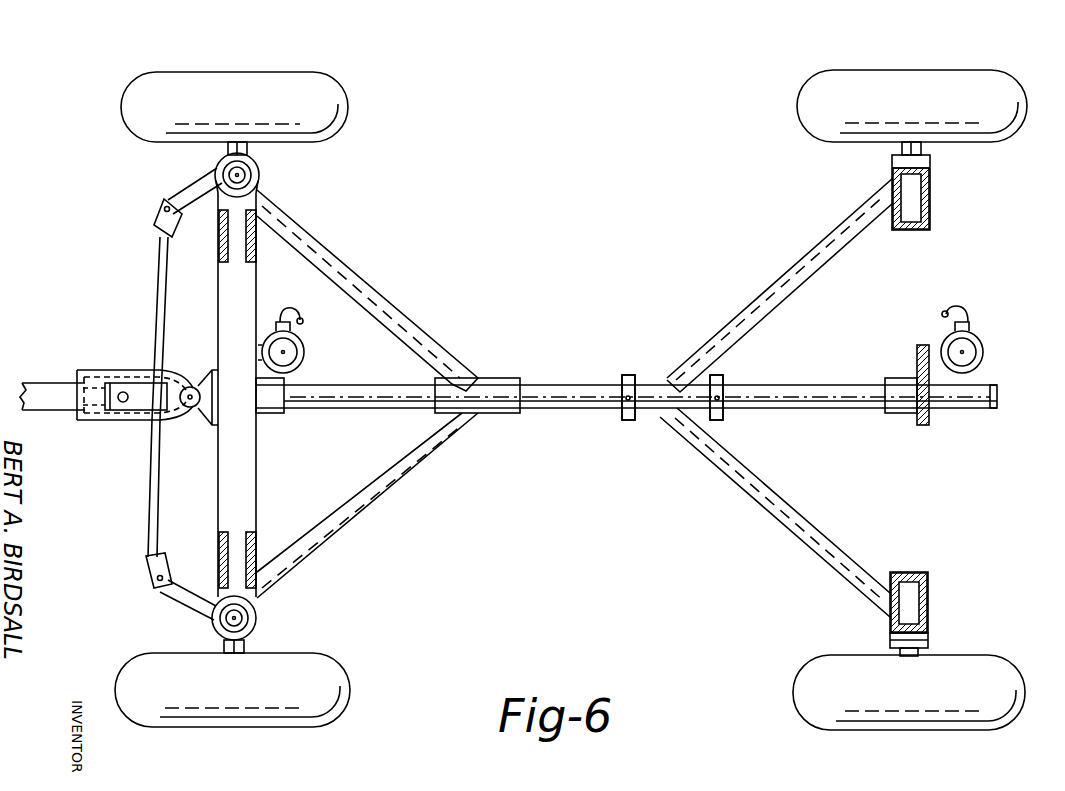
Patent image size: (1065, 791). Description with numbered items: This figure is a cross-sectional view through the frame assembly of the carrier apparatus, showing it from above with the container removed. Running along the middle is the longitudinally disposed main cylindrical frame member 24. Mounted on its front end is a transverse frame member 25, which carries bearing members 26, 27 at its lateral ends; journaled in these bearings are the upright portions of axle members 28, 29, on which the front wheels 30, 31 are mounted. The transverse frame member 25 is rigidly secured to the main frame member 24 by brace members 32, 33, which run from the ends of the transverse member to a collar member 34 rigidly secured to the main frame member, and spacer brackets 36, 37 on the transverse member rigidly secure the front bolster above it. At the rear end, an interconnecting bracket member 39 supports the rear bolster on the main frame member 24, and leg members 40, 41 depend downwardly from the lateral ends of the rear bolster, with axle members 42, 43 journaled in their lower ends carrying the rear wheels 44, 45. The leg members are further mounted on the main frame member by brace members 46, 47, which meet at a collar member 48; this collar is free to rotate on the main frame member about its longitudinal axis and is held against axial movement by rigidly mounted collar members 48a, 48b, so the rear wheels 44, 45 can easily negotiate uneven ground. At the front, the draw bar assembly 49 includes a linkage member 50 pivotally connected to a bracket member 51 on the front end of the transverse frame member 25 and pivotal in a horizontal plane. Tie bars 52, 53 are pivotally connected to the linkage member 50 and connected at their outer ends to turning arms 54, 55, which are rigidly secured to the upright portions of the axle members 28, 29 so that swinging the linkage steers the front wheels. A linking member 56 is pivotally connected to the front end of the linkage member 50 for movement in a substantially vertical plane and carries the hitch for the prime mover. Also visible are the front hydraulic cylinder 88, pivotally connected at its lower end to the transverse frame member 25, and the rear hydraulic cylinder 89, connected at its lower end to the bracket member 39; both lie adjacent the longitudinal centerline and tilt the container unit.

The main cylindrical frame member 24 is at (590, 422).
The transverse frame member 25 is at (256, 458).
The bearing member 26 is at (261, 176).
The bearing member 27 is at (258, 619).
The axle member 28 is at (226, 148).
The axle member 29 is at (222, 644).
The front wheel 30 is at (352, 102).
The front wheel 31 is at (352, 702).
The brace member 32 is at (384, 298).
The brace member 33 is at (404, 487).
The collar member 34 is at (497, 412).
The spacer bracket 36 is at (258, 250).
The spacer bracket 37 is at (258, 542).
The bracket member 39 is at (916, 362).
The leg member 40 is at (929, 602).
The leg member 41 is at (931, 198).
The axle member 42 is at (898, 650).
The axle member 43 is at (900, 148).
The rear wheel 44 is at (975, 732).
The rear wheel 45 is at (968, 68).
The brace member 46 is at (762, 508).
The brace member 47 is at (772, 284).
The collar member 48 is at (646, 414).
The collar member 48a is at (628, 374).
The collar member 48b is at (724, 420).
The draw bar assembly 49 is at (92, 420).
The linkage member 50 is at (166, 420).
The bracket member 51 is at (206, 415).
The tie bar 52 is at (144, 282).
The tie bar 53 is at (140, 506).
The turning arm 54 is at (196, 208).
The turning arm 55 is at (192, 584).
The linking member 56 is at (48, 405).
The front hydraulic cylinder 88 is at (305, 357).
The rear hydraulic cylinder 89 is at (985, 357).